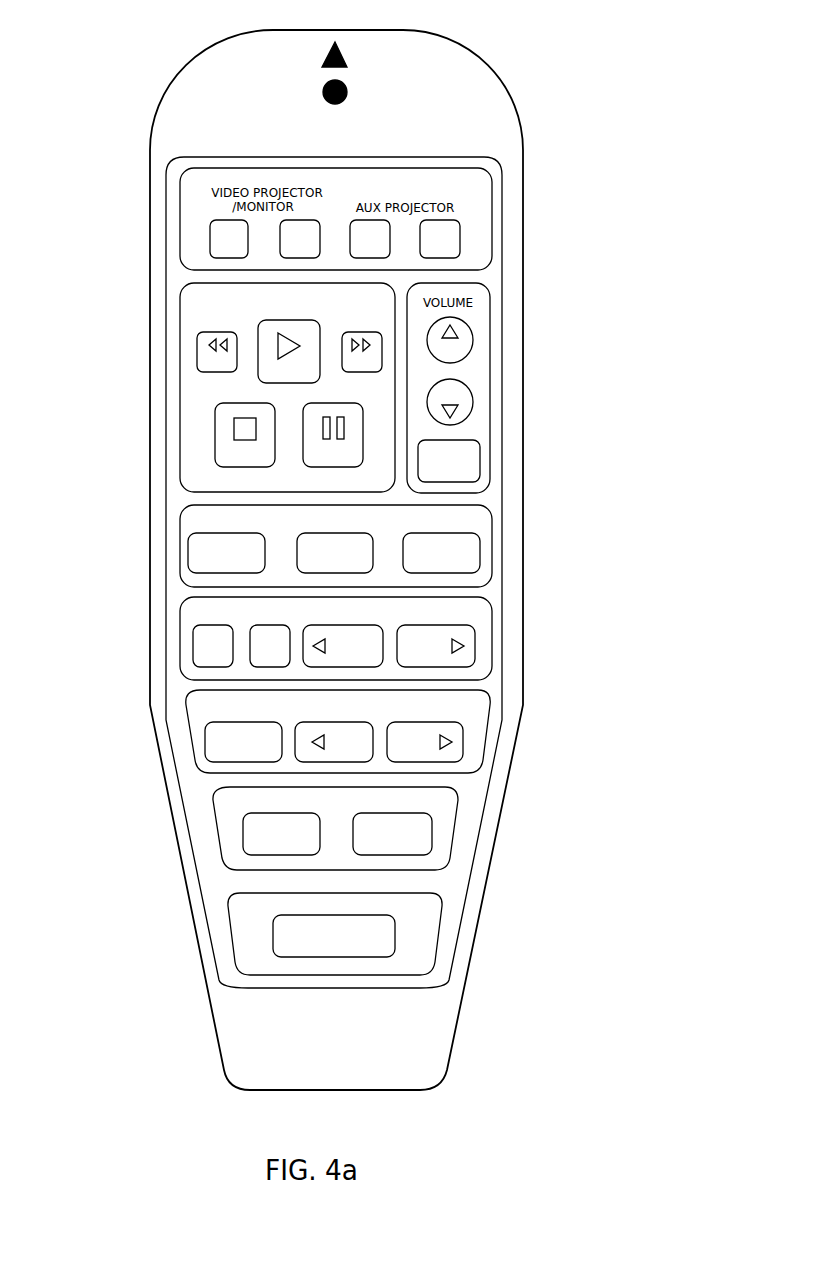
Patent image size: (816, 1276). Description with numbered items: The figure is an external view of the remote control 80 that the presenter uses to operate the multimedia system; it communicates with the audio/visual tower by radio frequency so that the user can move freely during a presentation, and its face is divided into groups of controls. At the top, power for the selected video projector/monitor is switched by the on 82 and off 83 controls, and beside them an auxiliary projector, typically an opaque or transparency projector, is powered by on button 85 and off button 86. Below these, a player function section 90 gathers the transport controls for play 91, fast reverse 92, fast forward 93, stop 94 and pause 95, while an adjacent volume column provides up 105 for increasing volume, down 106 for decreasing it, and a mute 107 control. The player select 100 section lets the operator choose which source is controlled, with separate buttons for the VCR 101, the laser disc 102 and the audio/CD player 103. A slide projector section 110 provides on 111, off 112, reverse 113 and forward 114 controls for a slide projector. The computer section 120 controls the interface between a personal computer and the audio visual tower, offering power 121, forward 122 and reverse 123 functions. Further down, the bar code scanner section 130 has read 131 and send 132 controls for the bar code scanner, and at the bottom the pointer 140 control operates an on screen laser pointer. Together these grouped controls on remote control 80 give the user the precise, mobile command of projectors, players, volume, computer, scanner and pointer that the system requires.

The remote control 80 is at (137, 30).
The on control 82 is at (210, 248).
The off control 83 is at (308, 222).
The on button 85 is at (380, 227).
The off button 86 is at (458, 238).
The player function section 90 is at (208, 317).
The play control 91 is at (262, 373).
The fast reverse control 92 is at (197, 350).
The fast forward control 93 is at (343, 368).
The stop control 94 is at (225, 438).
The pause control 95 is at (308, 458).
The player select section 100 is at (478, 527).
The VCR select control 101 is at (202, 552).
The laser disc select control 102 is at (310, 568).
The audio CD select button 103 is at (465, 567).
The volume up control 105 is at (465, 338).
The volume down control 106 is at (473, 398).
The mute control 107 is at (470, 460).
The slide projector section 110 is at (477, 618).
The slide projector on control 111 is at (202, 637).
The slide projector off control 112 is at (255, 658).
The slide projector reverse control 113 is at (357, 658).
The slide projector forward control 114 is at (467, 645).
The computer section 120 is at (470, 733).
The power control 121 is at (212, 730).
The forward control 122 is at (462, 757).
The computer reverse button 123 is at (327, 755).
The bar code scanner section 130 is at (442, 808).
The read control 131 is at (255, 828).
The send control 132 is at (420, 843).
The pointer control 140 is at (420, 960).